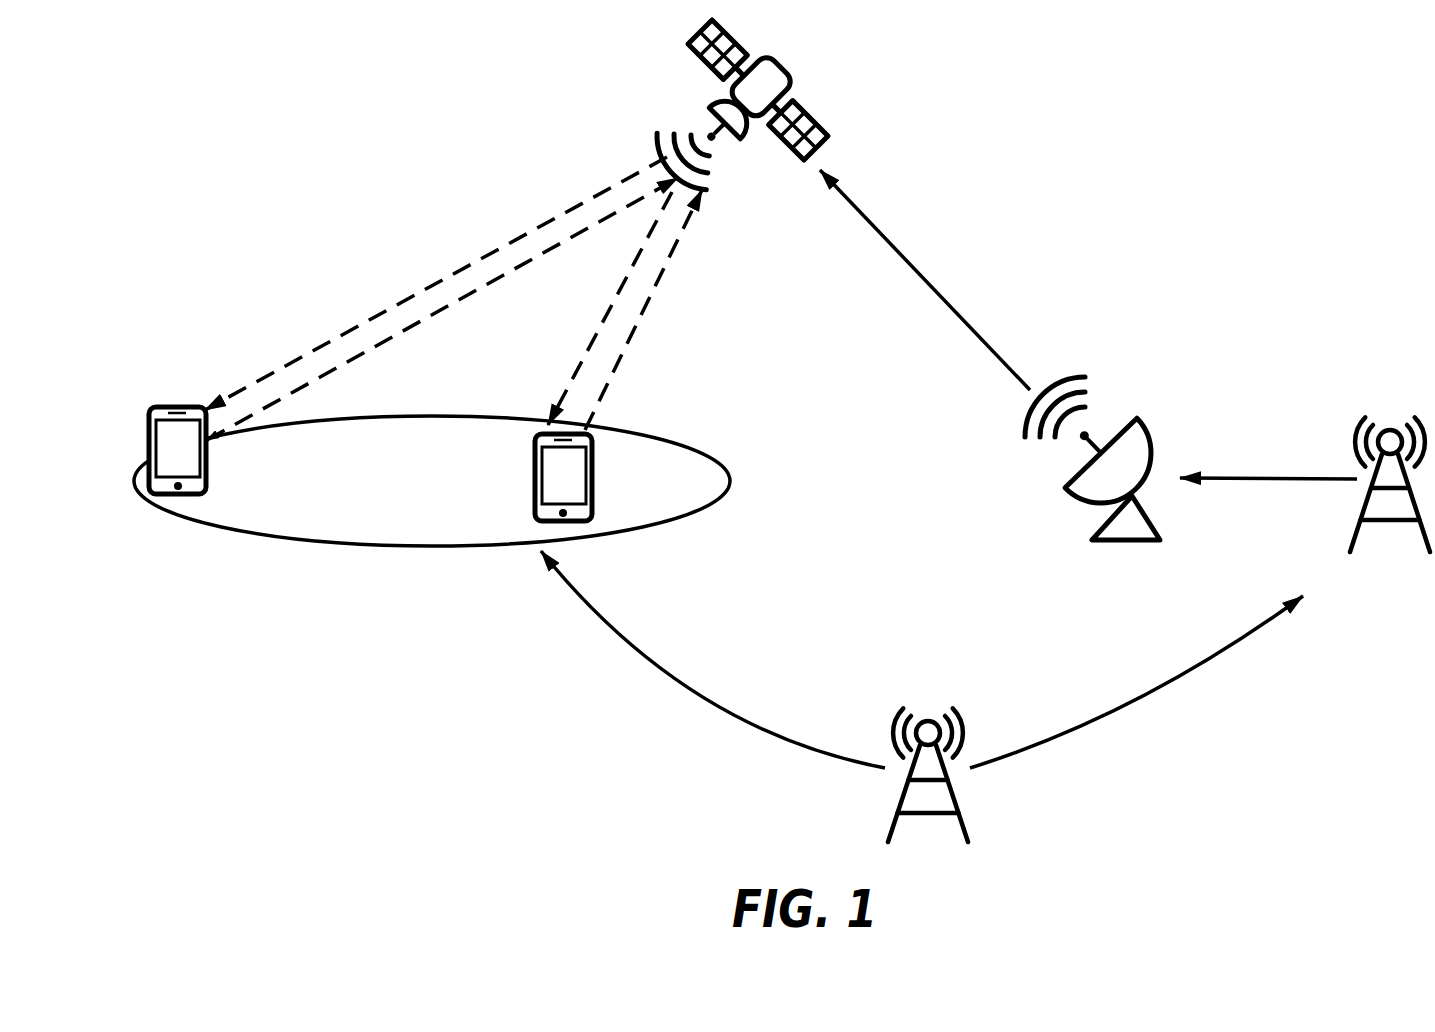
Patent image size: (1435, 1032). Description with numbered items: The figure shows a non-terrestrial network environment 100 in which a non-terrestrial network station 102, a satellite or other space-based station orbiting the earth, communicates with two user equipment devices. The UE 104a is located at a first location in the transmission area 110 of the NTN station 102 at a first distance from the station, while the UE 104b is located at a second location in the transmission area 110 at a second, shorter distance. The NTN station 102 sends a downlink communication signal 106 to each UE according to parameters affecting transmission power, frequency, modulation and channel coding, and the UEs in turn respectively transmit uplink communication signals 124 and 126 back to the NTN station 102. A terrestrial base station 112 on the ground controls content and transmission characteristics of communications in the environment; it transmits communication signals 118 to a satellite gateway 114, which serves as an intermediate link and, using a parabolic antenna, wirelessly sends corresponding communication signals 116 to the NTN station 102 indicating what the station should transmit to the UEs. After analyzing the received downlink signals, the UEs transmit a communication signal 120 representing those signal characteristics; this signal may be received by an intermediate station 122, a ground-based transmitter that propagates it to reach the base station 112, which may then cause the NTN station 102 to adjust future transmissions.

The non-terrestrial network environment 100 is at (1288, 195).
The non-terrestrial network station 102 is at (793, 74).
The user equipment 104a is at (172, 405).
The user equipment 104b is at (535, 464).
The communication signal 106 is at (445, 277).
The transmission area 110 is at (645, 528).
The terrestrial base station 112 is at (1385, 545).
The satellite gateway 114 is at (1122, 545).
The communication signals 116 is at (974, 325).
The communication signals 118 is at (1262, 478).
The communication signal 120 is at (740, 722).
The intermediate station 122 is at (957, 797).
The communication signal 124 is at (360, 358).
The communication signal 126 is at (672, 258).